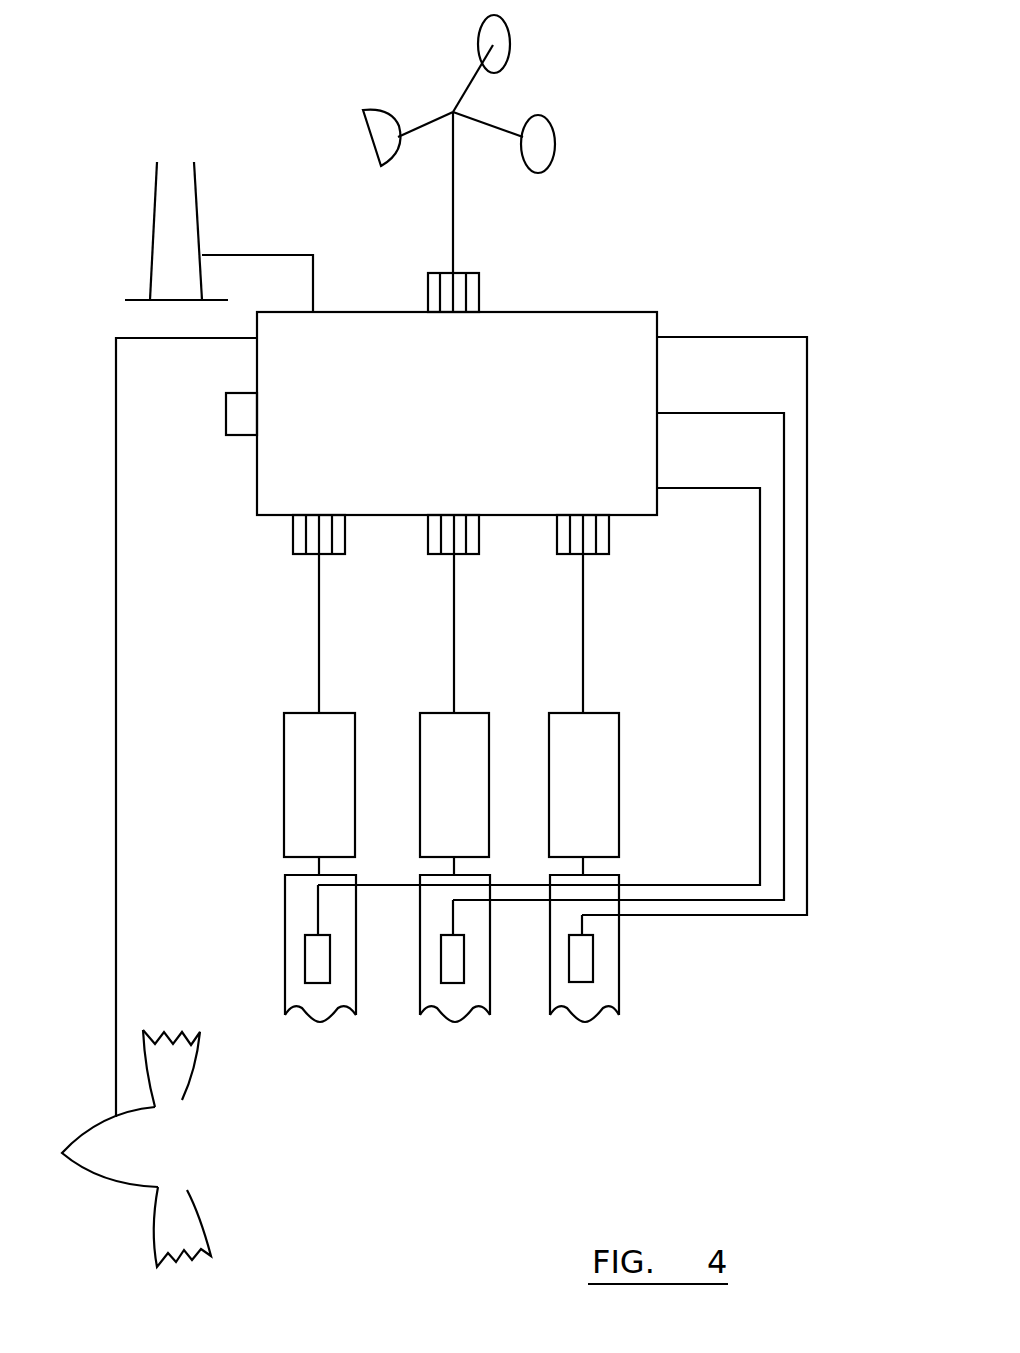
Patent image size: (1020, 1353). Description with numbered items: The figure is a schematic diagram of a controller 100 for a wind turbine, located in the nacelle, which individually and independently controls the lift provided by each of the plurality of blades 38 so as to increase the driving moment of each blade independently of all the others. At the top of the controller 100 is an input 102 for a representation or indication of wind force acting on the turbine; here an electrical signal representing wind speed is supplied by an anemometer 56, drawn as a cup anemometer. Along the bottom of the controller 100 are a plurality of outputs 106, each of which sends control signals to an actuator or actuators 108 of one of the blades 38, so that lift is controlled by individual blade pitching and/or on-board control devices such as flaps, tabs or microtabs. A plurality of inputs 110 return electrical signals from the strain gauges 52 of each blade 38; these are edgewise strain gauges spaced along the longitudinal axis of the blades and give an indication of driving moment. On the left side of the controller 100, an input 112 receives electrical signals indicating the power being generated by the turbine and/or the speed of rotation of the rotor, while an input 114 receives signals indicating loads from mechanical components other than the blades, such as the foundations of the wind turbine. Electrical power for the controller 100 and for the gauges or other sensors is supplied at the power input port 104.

The blade 38 is at (455, 1000).
The strain gauge 52 is at (320, 958).
The anemometer 56 is at (453, 208).
The controller 100 is at (568, 336).
The input 102 is at (479, 292).
The power input port 104 is at (245, 422).
The outputs 106 is at (290, 533).
The actuator 108 is at (313, 790).
The inputs 110 is at (727, 336).
The input 112 is at (170, 340).
The input 114 is at (263, 253).